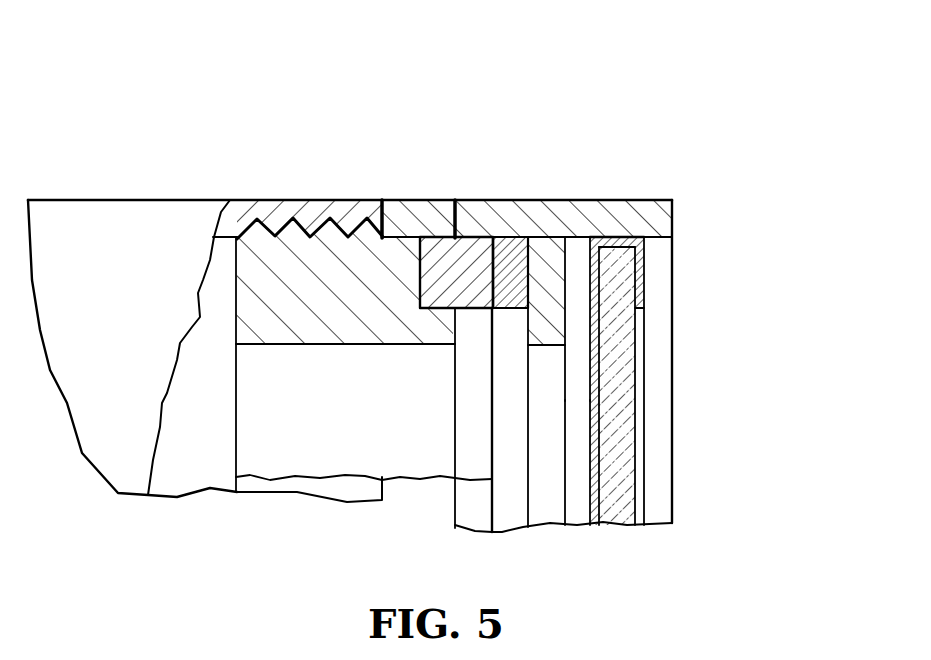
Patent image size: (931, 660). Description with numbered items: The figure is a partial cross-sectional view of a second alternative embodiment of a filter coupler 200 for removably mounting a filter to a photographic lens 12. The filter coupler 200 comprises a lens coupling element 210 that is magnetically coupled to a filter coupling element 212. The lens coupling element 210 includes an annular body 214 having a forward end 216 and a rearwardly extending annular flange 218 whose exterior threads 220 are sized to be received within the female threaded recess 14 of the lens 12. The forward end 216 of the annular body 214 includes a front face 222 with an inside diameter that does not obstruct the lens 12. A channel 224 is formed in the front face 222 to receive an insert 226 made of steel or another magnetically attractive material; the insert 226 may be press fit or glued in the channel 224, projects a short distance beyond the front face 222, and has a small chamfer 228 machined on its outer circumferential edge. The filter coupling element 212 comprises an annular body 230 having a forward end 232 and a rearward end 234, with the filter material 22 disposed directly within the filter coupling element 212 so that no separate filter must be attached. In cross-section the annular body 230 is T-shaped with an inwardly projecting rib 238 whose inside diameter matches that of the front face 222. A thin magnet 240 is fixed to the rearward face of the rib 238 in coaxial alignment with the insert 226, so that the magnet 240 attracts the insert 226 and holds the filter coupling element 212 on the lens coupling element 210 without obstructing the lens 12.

The lens 12 is at (87, 198).
The female threaded recess 14 is at (283, 233).
The filter material 22 is at (617, 507).
The filter coupler 200 is at (504, 122).
The lens coupling element 210 is at (421, 193).
The filter coupling element 212 is at (573, 198).
The annular body 214 is at (322, 236).
The forward end 216 is at (346, 344).
The annular flange 218 is at (265, 290).
The exterior threads 220 is at (262, 241).
The front face 222 is at (457, 327).
The channel 224 is at (418, 237).
The insert 226 is at (440, 306).
The chamfer 228 is at (492, 272).
The annular body 230 is at (612, 200).
The forward end 232 is at (672, 213).
The rearward end 234 is at (455, 233).
The rib 238 is at (530, 308).
The magnet 240 is at (505, 300).